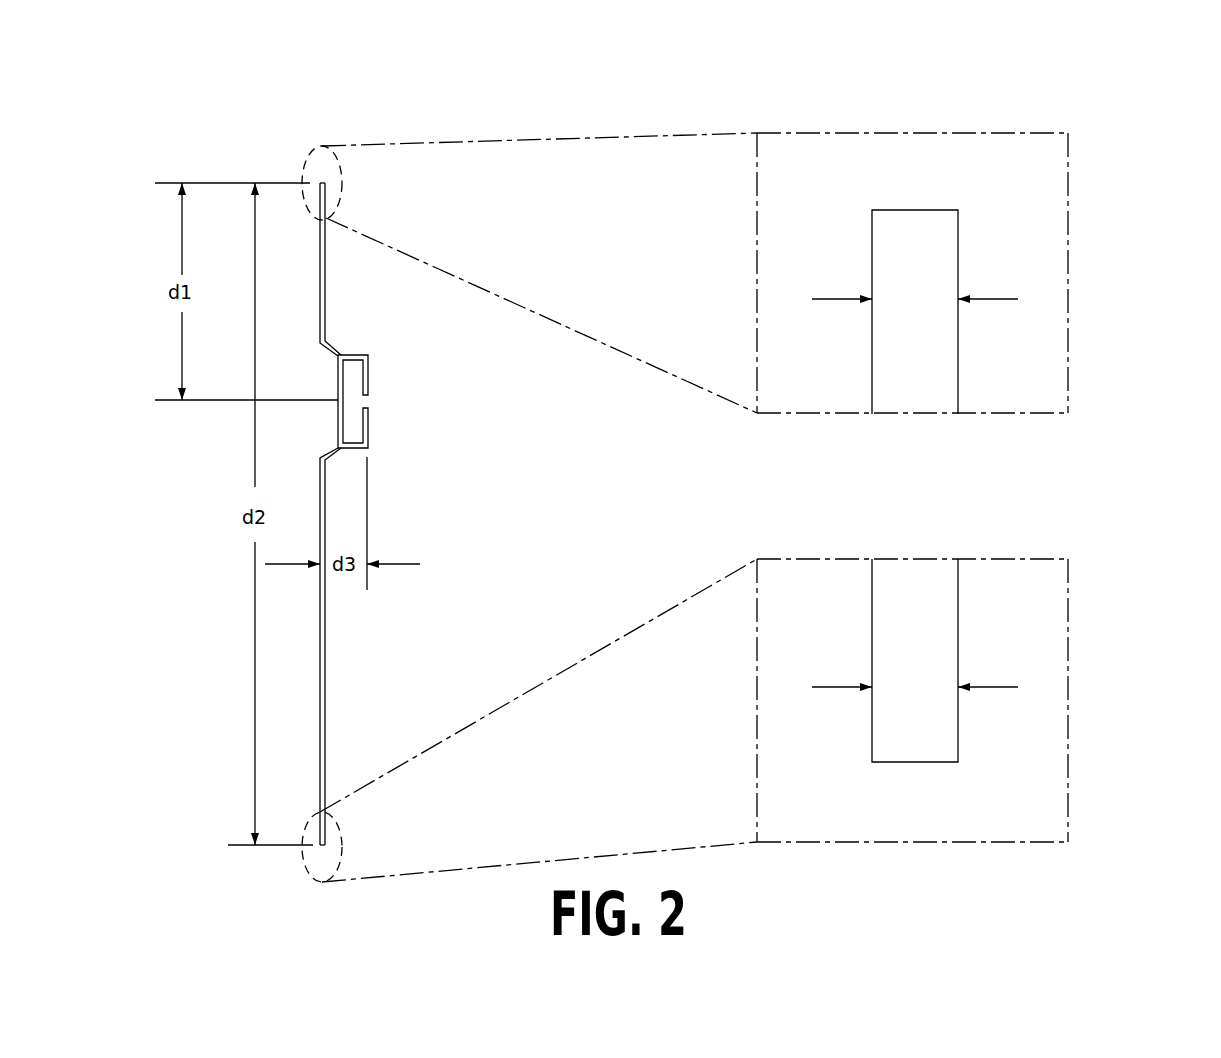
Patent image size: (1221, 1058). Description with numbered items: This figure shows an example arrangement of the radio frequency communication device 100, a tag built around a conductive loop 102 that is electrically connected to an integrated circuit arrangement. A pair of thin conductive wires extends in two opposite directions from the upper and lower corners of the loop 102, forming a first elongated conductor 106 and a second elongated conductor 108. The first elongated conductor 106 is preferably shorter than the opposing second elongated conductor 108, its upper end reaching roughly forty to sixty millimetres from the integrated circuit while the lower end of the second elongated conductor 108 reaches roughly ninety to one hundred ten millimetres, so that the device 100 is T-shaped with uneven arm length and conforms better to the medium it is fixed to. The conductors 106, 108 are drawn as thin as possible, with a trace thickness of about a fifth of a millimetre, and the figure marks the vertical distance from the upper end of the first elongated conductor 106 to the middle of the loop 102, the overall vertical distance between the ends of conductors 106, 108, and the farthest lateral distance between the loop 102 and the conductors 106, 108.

The radio frequency communication device 100 is at (1040, 80).
The conductive loop 102 is at (338, 381).
The first elongated conductor 106 is at (320, 260).
The second elongated conductor 108 is at (320, 725).